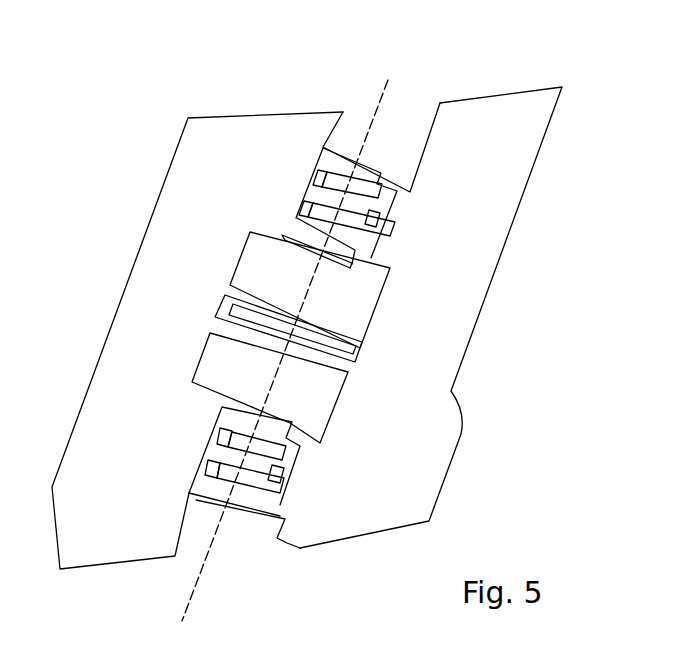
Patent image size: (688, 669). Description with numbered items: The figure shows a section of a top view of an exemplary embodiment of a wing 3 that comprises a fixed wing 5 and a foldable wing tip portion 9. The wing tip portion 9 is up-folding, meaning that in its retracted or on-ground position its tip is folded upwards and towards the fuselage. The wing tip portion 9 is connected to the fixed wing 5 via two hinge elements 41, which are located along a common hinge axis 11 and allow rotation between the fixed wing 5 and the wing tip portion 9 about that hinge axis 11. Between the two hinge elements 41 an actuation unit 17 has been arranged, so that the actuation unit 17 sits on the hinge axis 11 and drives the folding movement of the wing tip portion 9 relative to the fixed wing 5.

The wing 3 is at (320, 284).
The fixed wing 5 is at (103, 346).
The foldable wing tip portion 9 is at (452, 472).
The hinge axis 11 is at (376, 118).
The actuation unit 17 is at (332, 350).
The hinge elements 41 is at (388, 152).